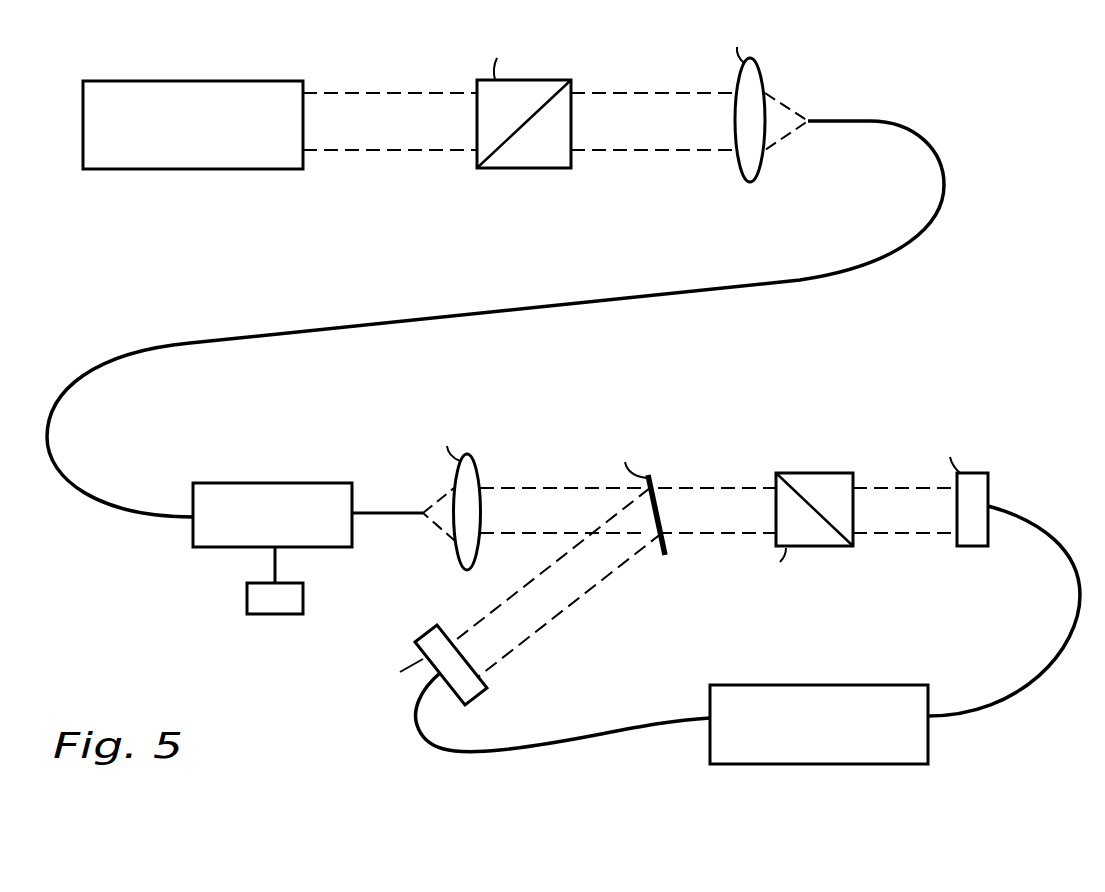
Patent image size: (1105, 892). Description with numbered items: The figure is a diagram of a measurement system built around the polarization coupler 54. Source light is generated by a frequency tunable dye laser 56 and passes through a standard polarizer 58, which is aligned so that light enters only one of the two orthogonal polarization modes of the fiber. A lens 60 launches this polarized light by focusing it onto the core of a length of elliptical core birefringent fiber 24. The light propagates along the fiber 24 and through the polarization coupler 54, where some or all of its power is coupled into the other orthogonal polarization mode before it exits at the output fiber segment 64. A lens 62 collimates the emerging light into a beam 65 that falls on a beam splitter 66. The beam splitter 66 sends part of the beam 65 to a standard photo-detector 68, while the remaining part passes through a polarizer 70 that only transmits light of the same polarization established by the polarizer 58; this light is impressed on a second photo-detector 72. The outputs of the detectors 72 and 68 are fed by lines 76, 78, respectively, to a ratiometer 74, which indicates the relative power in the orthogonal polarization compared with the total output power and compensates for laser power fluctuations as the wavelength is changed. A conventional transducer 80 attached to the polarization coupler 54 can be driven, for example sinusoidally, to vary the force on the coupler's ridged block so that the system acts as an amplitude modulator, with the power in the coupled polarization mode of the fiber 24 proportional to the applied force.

The elliptical core birefringent fiber 24 is at (946, 183).
The polarization coupler 54 is at (323, 548).
The frequency tunable dye laser 56 is at (243, 81).
The polarizer 58 is at (527, 160).
The lens 60 is at (763, 79).
The lens 62 is at (481, 474).
The fiber segment 64 is at (391, 517).
The beam 65 is at (554, 491).
The beam splitter 66 is at (660, 500).
The photo-detector 68 is at (487, 680).
The polarizer 70 is at (818, 473).
The photo-detector 72 is at (990, 487).
The ratiometer 74 is at (853, 766).
The line 76 is at (1048, 670).
The line 78 is at (553, 746).
The transducer 80 is at (247, 603).